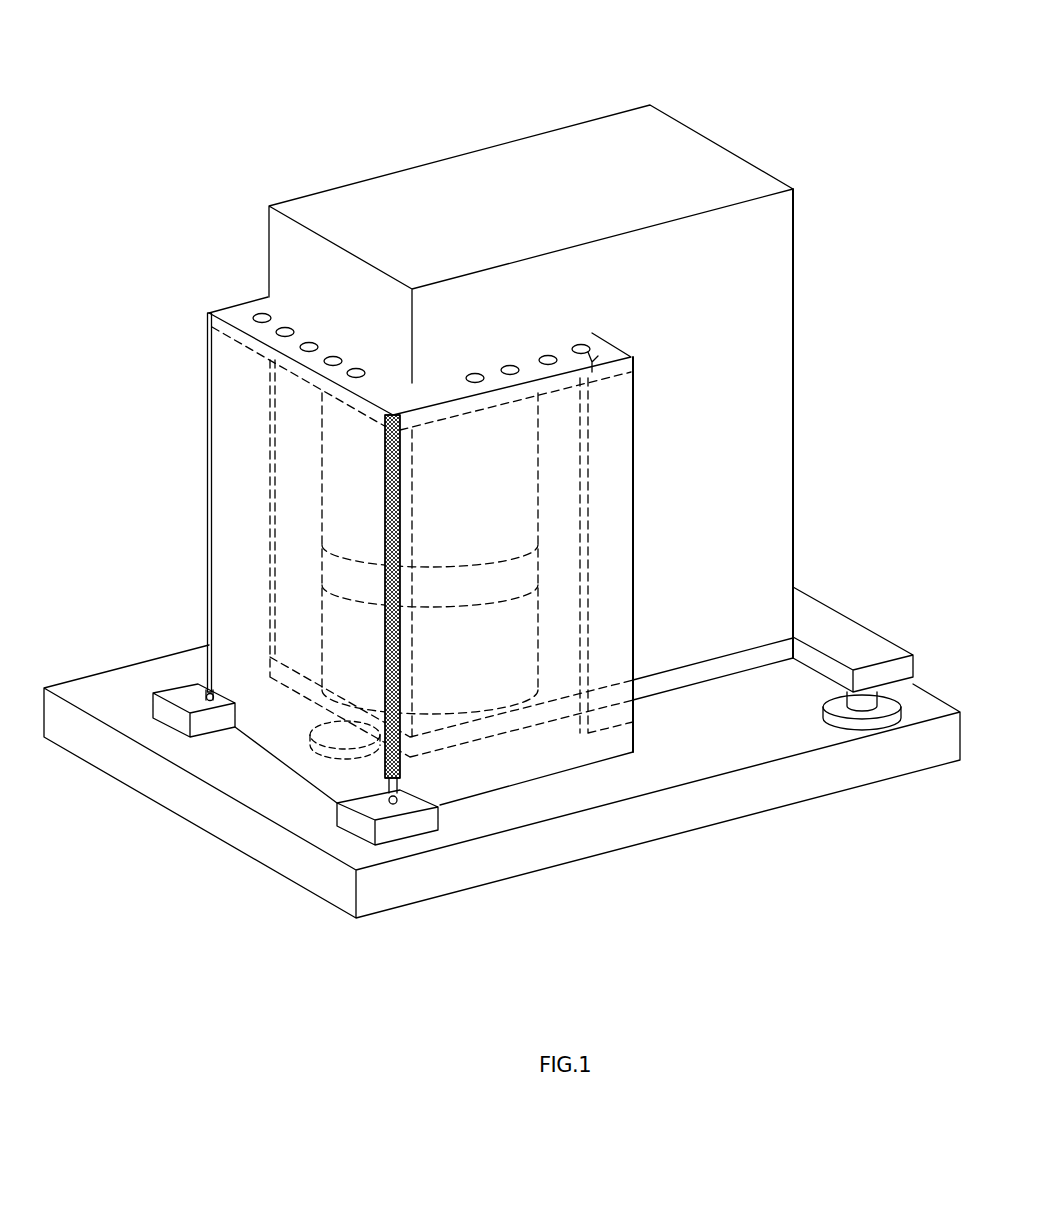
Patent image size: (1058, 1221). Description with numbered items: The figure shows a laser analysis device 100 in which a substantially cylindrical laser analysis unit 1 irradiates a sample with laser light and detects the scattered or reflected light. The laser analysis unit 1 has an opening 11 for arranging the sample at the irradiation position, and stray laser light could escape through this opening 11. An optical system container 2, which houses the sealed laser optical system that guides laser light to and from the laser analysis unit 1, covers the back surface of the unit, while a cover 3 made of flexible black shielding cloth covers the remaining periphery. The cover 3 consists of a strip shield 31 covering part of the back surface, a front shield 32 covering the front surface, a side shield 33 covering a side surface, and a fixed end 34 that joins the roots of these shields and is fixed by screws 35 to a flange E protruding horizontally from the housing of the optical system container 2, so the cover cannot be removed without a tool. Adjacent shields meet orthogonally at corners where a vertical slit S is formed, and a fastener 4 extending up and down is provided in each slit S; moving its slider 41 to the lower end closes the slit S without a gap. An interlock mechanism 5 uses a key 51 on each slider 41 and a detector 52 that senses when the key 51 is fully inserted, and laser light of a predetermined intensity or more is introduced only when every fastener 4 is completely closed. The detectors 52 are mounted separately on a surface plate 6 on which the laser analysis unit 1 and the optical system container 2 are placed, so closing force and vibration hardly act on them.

The laser analysis device 100 is at (248, 105).
The laser analysis unit 1 is at (427, 576).
The opening 11 is at (418, 590).
The optical system container 2 is at (552, 130).
The cover 3 is at (404, 550).
The strip shield 31 is at (258, 299).
The front shield 32 is at (278, 750).
The side shield 33 is at (528, 786).
The fixed end 34 is at (594, 357).
The screw 35 is at (295, 332).
The fastener 4 is at (203, 546).
The slider 41 is at (210, 688).
The interlock mechanism 5 is at (293, 773).
The key 51 is at (312, 765).
The detector 52 is at (195, 697).
The surface plate 6 is at (638, 850).
The slit S is at (209, 306).
The flange E is at (243, 343).